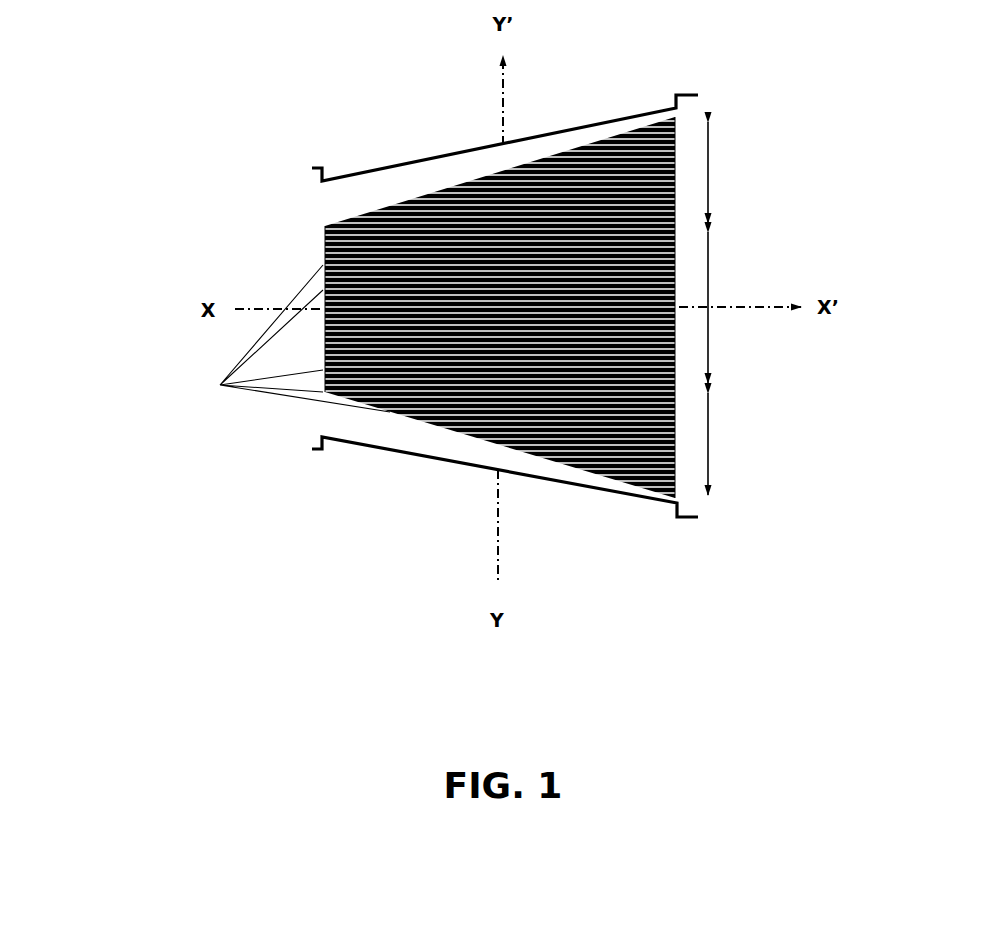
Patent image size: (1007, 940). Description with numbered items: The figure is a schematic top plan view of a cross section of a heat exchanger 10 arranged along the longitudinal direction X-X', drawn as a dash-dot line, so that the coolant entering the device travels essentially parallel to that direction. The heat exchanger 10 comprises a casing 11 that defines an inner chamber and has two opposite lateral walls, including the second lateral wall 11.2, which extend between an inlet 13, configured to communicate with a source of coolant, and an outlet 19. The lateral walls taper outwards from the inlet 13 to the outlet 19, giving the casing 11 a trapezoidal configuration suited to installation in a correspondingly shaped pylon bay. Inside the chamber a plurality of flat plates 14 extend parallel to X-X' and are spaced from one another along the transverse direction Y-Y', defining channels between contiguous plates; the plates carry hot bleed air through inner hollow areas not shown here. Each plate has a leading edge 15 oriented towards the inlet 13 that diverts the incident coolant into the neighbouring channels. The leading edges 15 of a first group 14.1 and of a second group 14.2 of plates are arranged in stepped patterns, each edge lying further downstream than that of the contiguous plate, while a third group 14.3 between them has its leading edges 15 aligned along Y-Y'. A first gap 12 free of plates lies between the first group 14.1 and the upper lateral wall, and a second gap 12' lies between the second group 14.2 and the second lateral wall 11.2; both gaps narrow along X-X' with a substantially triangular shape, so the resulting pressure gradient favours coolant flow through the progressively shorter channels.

The heat exchanger 10 is at (262, 115).
The casing 11 is at (435, 140).
The second lateral wall 11.2 is at (480, 466).
The first gap 12 is at (438, 168).
The second gap 12' is at (429, 446).
The inlet 13 is at (175, 332).
The flat plates 14 is at (282, 256).
The first group of plates 14.1 is at (746, 172).
The second group of plates 14.2 is at (746, 444).
The third group of plates 14.3 is at (746, 307).
The leading edge 15 is at (285, 338).
The outlet 19 is at (793, 220).